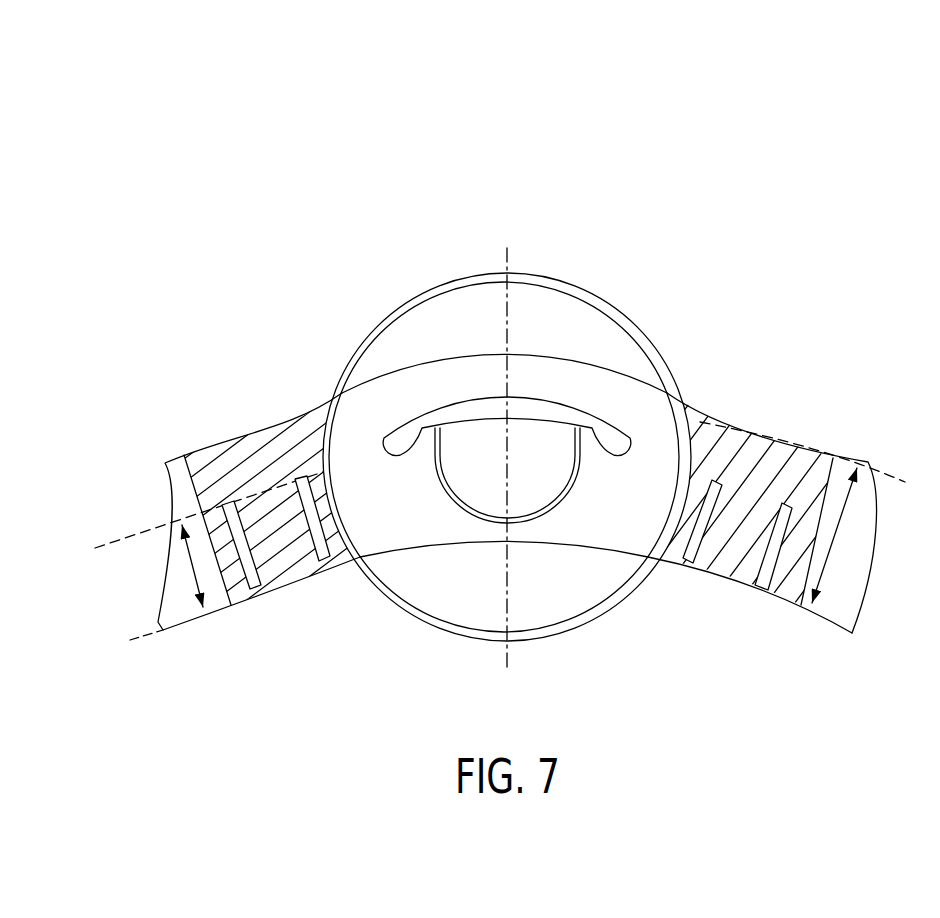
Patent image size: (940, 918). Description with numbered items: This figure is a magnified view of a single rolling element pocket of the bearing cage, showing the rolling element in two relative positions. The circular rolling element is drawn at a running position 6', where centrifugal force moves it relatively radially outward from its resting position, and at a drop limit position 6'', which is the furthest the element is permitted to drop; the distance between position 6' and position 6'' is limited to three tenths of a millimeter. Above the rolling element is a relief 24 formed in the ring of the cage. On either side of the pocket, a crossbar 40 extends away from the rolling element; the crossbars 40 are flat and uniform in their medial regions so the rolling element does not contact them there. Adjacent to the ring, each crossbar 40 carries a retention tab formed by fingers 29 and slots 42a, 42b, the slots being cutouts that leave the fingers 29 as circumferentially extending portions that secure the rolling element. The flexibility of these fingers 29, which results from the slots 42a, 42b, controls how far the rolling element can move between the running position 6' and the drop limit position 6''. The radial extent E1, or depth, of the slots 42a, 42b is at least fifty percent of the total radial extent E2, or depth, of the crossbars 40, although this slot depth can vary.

The running position of the rolling element 6' is at (507, 398).
The drop limit position of the rolling element 6'' is at (504, 503).
The relief 24 is at (513, 410).
The crossbar 40 is at (262, 457).
The slot 42a is at (323, 550).
The slot 42b is at (253, 580).
The finger 29 is at (681, 540).
The radial extent of the slots E1 is at (190, 560).
The radial extent of the crossbars E2 is at (833, 537).